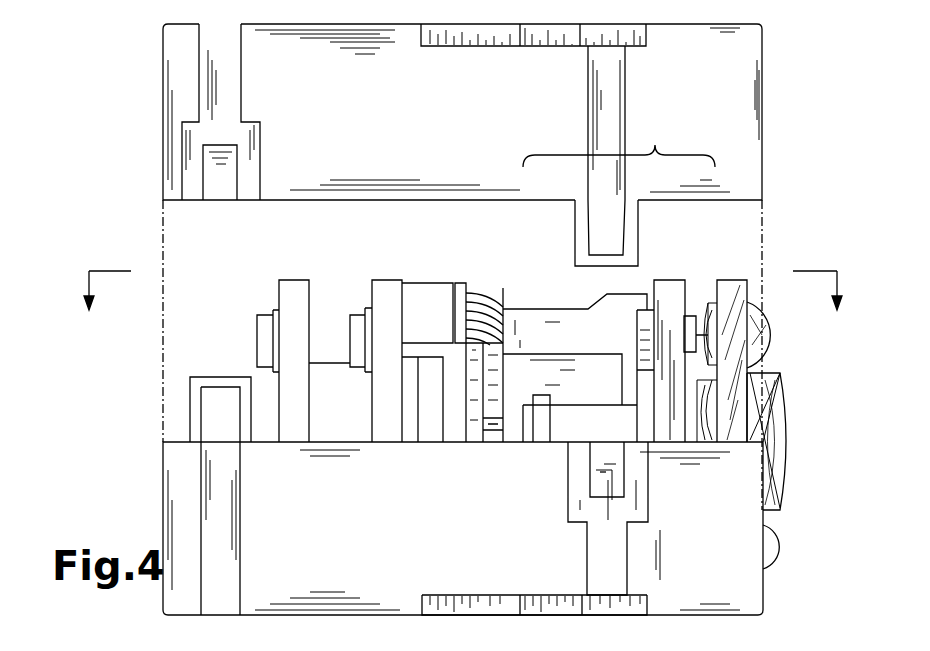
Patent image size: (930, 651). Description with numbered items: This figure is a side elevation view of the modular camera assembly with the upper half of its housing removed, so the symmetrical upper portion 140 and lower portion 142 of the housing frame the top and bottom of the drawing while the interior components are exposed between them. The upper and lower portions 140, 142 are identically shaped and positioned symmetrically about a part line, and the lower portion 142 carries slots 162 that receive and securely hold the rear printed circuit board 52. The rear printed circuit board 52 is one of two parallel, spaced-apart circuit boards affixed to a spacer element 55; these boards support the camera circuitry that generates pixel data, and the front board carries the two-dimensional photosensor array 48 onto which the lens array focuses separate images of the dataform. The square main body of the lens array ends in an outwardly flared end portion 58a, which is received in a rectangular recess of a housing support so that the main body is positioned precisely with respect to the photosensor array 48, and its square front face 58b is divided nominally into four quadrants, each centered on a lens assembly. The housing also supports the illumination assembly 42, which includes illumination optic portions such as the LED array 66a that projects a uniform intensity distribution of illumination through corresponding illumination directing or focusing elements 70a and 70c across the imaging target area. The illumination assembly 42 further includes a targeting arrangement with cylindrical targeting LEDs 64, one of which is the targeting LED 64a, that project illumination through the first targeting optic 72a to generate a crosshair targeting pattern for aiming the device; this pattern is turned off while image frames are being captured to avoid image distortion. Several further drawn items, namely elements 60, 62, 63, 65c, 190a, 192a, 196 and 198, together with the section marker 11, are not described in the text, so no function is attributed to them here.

The upper portion 140 is at (778, 87).
The lower portion 142 is at (133, 461).
The illumination assembly 42 is at (619, 143).
The rear printed circuit board 52 is at (290, 280).
The spacer element 55 is at (330, 385).
The targeting LED 64 is at (385, 280).
The insert block 198 is at (423, 305).
The spring washers 196 is at (483, 292).
The outwardly flared end portion 58a is at (562, 373).
The front face 58b is at (473, 430).
The third plate 60 is at (664, 280).
The illumination optic portion 66a is at (690, 317).
The lens plate 62 is at (730, 280).
The illumination focusing element 70a is at (772, 334).
The illumination focusing element 70c is at (772, 545).
The first targeting optic 72a is at (795, 432).
The guide block 190a is at (197, 385).
The guide pin 192a is at (603, 470).
The slot 162 is at (335, 527).
The two dimensional photosensor array 48 is at (500, 387).
The sleeve 63 is at (432, 420).
The targeting LED 64a is at (585, 423).
The ejector pin 65c is at (510, 423).
The section line 11 is at (463, 304).